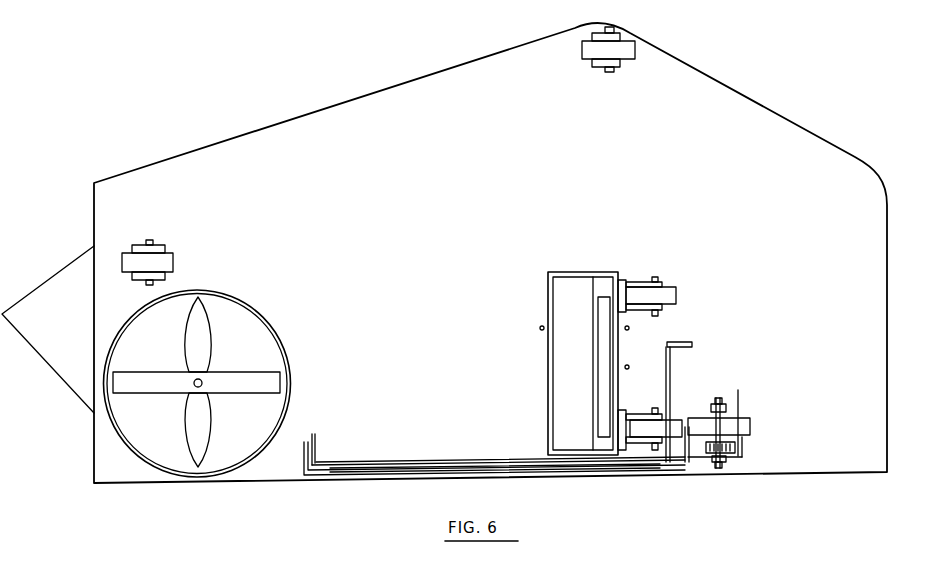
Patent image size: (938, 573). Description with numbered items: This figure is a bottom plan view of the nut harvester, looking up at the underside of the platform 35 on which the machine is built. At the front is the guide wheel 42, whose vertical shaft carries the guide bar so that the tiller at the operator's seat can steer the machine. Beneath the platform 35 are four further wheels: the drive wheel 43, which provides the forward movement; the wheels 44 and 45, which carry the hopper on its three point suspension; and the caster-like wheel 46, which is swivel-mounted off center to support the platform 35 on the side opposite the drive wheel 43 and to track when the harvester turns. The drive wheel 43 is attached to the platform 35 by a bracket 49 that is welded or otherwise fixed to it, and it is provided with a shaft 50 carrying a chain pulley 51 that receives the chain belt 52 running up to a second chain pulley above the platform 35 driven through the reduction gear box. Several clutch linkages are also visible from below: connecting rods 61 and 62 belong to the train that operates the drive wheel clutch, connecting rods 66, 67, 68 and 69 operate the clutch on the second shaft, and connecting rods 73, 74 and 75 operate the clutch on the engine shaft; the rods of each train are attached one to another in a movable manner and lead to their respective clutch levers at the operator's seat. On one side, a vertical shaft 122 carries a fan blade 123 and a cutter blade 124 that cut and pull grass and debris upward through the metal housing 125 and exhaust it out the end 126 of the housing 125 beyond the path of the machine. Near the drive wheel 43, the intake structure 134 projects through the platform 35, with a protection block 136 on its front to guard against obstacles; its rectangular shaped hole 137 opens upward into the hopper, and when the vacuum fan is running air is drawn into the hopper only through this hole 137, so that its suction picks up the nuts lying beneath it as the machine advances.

The platform 35 is at (364, 95).
The end of the housing 126 is at (20, 291).
The metal housing 125 is at (268, 323).
The cutter blade 124 is at (266, 394).
The vertical shaft 122 is at (205, 378).
The fan blade 123 is at (209, 333).
The guide wheel 42 is at (166, 262).
The wheel 46 is at (628, 47).
The protection block 136 is at (562, 294).
The intake structure 134 is at (601, 283).
The rectangular shaped hole 137 is at (606, 353).
The bracket 49 is at (633, 283).
The wheel 44 is at (668, 292).
The connecting rod 66 is at (678, 343).
The connecting rod 67 is at (671, 373).
The wheel 45 is at (662, 426).
The drive wheel 43 is at (752, 424).
The shaft 50 is at (720, 402).
The connecting rod 73 is at (738, 448).
The chain pulley 51 is at (733, 460).
The chain belt 52 is at (706, 456).
The connecting rod 69 is at (303, 462).
The connecting rod 75 is at (316, 437).
The connecting rod 62 is at (316, 452).
The connecting rod 74 is at (405, 463).
The connecting rod 68 is at (415, 469).
The connecting rod 61 is at (483, 470).